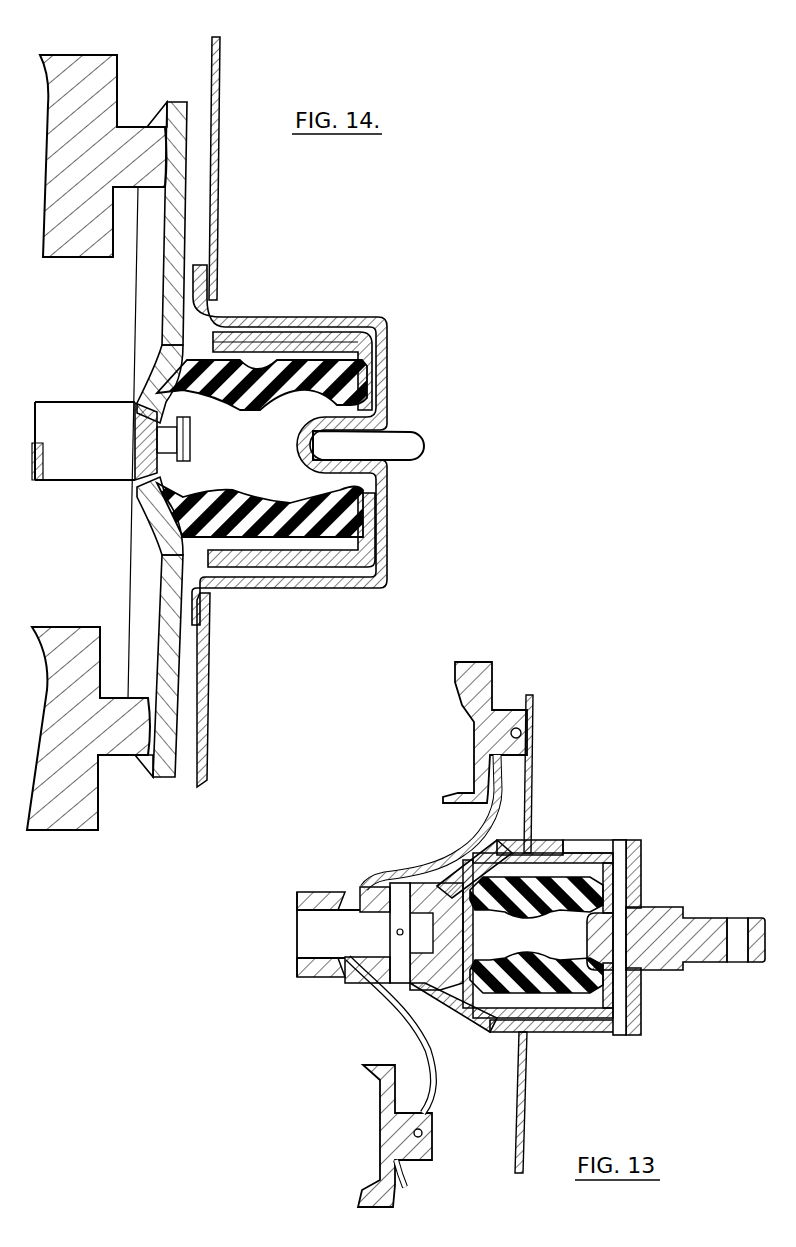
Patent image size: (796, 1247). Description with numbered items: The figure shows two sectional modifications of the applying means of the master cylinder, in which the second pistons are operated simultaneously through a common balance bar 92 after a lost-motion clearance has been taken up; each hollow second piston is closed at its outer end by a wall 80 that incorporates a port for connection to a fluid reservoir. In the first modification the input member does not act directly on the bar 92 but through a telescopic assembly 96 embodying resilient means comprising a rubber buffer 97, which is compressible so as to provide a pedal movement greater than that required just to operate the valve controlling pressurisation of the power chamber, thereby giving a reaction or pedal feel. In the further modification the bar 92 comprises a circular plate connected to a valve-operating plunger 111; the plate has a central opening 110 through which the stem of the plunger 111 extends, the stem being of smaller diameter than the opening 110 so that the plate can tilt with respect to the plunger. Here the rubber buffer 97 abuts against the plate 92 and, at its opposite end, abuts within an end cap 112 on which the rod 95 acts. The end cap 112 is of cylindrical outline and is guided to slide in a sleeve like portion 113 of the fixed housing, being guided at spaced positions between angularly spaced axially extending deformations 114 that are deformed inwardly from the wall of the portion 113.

In FIG. 14, the wall 80 is at (78, 82).
In FIG. 13, the wall 80 is at (470, 680).
In FIG. 14, the balance bar 92 is at (175, 270).
In FIG. 13, the balance bar 92 is at (435, 1073).
In FIG. 14, the rod 95 is at (384, 446).
In FIG. 13, the rod 95 is at (655, 933).
In FIG. 13, the telescopic assembly 96 is at (554, 851).
In FIG. 14, the rubber buffer 97 is at (240, 505).
In FIG. 13, the rubber buffer 97 is at (572, 998).
In FIG. 14, the central opening 110 is at (135, 478).
In FIG. 14, the valve-operating plunger 111 is at (87, 416).
In FIG. 14, the end cap 112 is at (386, 353).
In FIG. 14, the sleeve like portion 113 is at (246, 332).
In FIG. 14, the axially extending deformations 114 is at (309, 337).